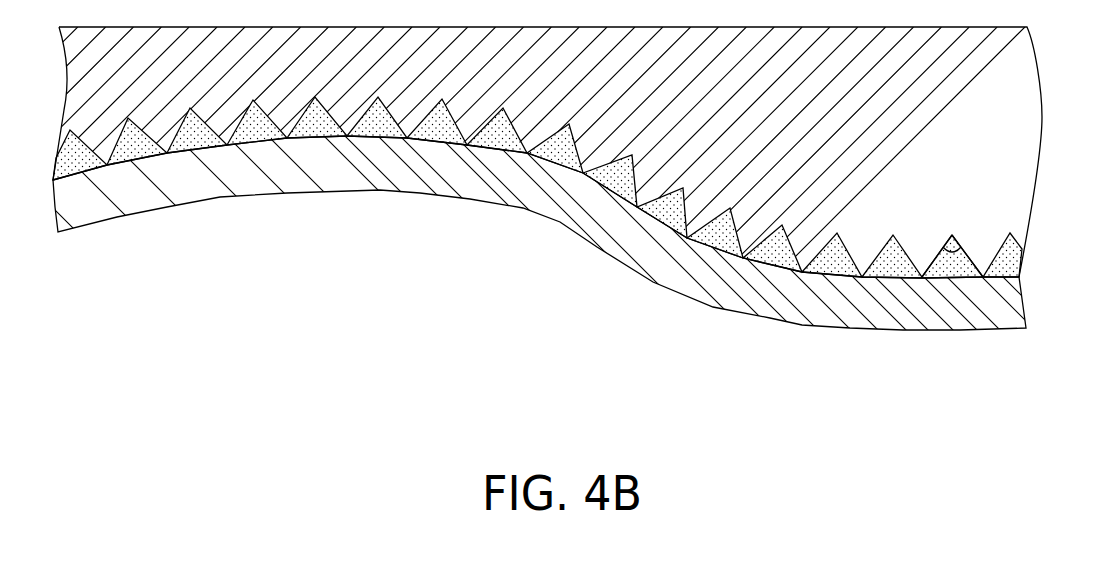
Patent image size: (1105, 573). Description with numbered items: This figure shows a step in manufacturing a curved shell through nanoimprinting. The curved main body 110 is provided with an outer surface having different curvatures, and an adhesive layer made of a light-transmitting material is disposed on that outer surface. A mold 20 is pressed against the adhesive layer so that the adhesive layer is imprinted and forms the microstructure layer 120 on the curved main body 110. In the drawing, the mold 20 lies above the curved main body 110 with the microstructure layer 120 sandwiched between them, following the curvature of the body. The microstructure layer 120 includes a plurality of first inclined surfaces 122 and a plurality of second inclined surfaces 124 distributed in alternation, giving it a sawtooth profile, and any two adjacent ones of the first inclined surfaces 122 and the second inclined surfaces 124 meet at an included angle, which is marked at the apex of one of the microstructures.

The mold 20 is at (1035, 119).
The curved main body 110 is at (1017, 302).
The microstructure layer 120 is at (1018, 258).
The first inclined surface 122 is at (960, 263).
The second inclined surface 124 is at (943, 262).